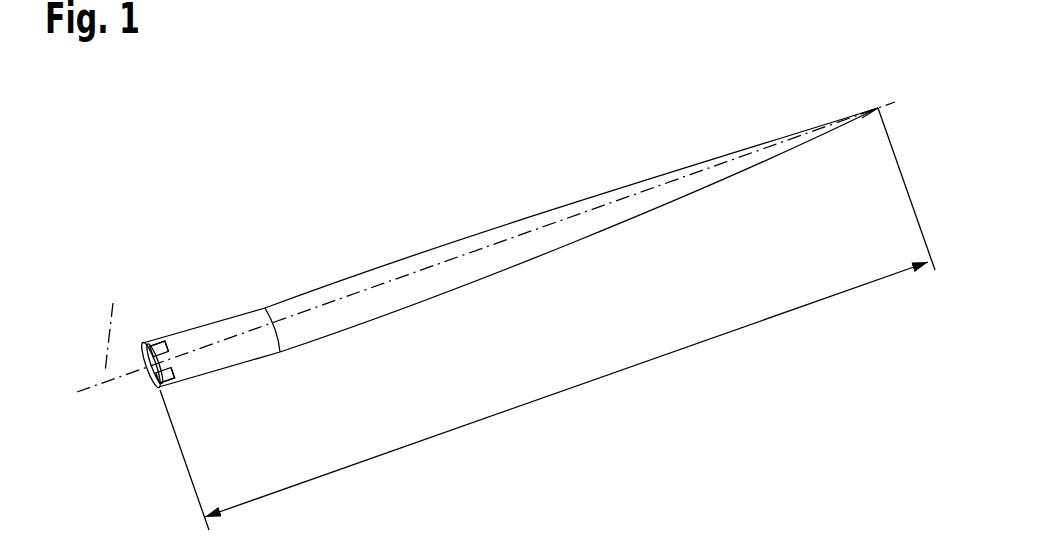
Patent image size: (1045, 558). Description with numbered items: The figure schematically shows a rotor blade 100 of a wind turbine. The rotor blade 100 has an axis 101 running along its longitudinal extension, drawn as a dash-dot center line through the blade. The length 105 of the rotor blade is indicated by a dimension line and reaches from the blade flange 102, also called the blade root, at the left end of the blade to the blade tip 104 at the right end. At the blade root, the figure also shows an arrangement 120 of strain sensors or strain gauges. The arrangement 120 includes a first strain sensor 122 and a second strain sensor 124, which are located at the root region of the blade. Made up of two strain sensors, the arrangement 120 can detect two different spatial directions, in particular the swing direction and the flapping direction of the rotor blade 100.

The rotor blade 100 is at (382, 168).
The axis 101 is at (112, 317).
The blade flange 102 is at (152, 330).
The blade tip 104 is at (878, 108).
The length 105 is at (673, 352).
The arrangement of strain sensors 120 is at (130, 428).
The first strain sensor 122 is at (184, 372).
The second strain sensor 124 is at (160, 340).